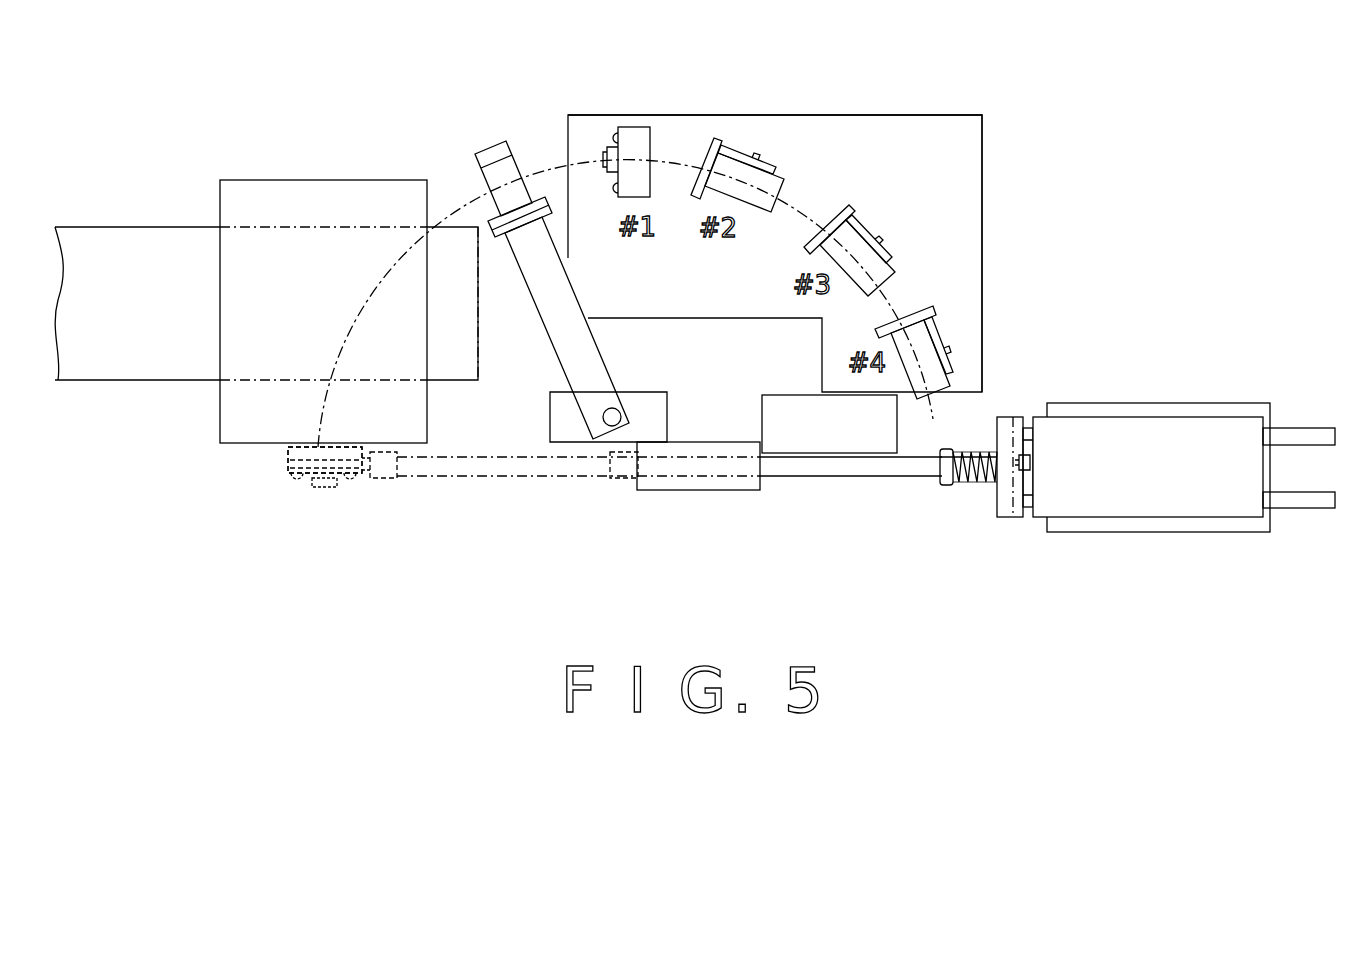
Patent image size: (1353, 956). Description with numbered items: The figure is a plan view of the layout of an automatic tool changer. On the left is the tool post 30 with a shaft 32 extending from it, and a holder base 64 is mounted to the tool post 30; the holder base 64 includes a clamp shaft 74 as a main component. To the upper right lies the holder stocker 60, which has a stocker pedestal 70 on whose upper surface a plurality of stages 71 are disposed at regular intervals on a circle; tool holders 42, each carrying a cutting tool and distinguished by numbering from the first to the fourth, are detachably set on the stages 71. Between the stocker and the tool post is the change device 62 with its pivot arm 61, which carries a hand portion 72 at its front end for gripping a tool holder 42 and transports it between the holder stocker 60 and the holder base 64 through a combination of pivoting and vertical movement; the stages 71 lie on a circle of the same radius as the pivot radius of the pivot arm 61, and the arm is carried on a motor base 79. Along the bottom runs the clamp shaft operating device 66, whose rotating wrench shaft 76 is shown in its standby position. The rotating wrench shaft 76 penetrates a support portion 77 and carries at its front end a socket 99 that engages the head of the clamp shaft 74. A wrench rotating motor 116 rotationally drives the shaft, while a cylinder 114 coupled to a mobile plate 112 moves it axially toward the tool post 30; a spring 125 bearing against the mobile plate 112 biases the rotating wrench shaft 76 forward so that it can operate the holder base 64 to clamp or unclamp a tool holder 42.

The tool post 30 is at (312, 193).
The shaft 32 is at (131, 241).
The tool holder 42 is at (753, 171).
The holder stocker 60 is at (884, 104).
The pivot arm 61 is at (570, 352).
The change device 62 is at (605, 293).
The holder base 64 is at (310, 475).
The clamp shaft operating device 66 is at (945, 525).
The stocker pedestal 70 is at (960, 156).
The stage 71 is at (632, 137).
The hand portion 72 is at (523, 158).
The clamp shaft 74 is at (288, 465).
The rotating wrench shaft 76 is at (463, 466).
The support portion 77 is at (672, 484).
The motor base 79 is at (655, 399).
The socket 99 is at (386, 471).
The mobile plate 112 is at (1007, 511).
The cylinder 114 is at (1170, 437).
The wrench rotating motor 116 is at (783, 421).
The spring 125 is at (968, 450).